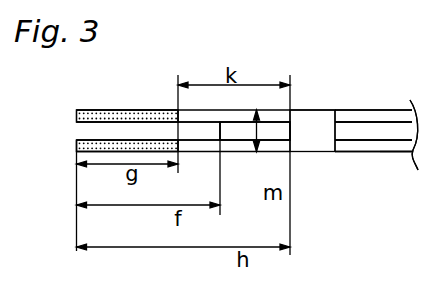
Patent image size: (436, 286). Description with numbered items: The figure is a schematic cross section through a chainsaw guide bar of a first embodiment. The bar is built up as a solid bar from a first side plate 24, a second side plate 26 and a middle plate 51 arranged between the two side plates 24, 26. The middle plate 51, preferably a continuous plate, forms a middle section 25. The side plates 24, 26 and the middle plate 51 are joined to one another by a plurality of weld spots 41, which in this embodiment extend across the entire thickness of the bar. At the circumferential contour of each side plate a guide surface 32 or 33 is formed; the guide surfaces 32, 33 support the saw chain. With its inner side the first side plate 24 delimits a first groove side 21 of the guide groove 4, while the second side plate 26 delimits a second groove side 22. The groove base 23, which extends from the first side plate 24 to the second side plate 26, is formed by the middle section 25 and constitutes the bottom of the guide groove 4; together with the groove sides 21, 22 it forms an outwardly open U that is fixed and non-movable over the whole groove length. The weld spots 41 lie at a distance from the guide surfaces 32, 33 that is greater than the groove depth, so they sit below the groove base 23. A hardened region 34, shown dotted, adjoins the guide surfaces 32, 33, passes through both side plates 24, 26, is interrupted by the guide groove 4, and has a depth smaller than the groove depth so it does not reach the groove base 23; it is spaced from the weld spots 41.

The first groove side 21 is at (90, 122).
The second groove side 22 is at (78, 141).
The first guide surface 32 is at (78, 113).
The second guide surface 33 is at (77, 148).
The hardened region 34 is at (154, 140).
The groove base 23 is at (219, 131).
The guide groove 4 is at (180, 127).
The weld spots 41 is at (311, 122).
The first side plate 24 is at (381, 114).
The middle section 25 is at (358, 131).
The second side plate 26 is at (348, 148).
The middle plate 51 is at (395, 137).